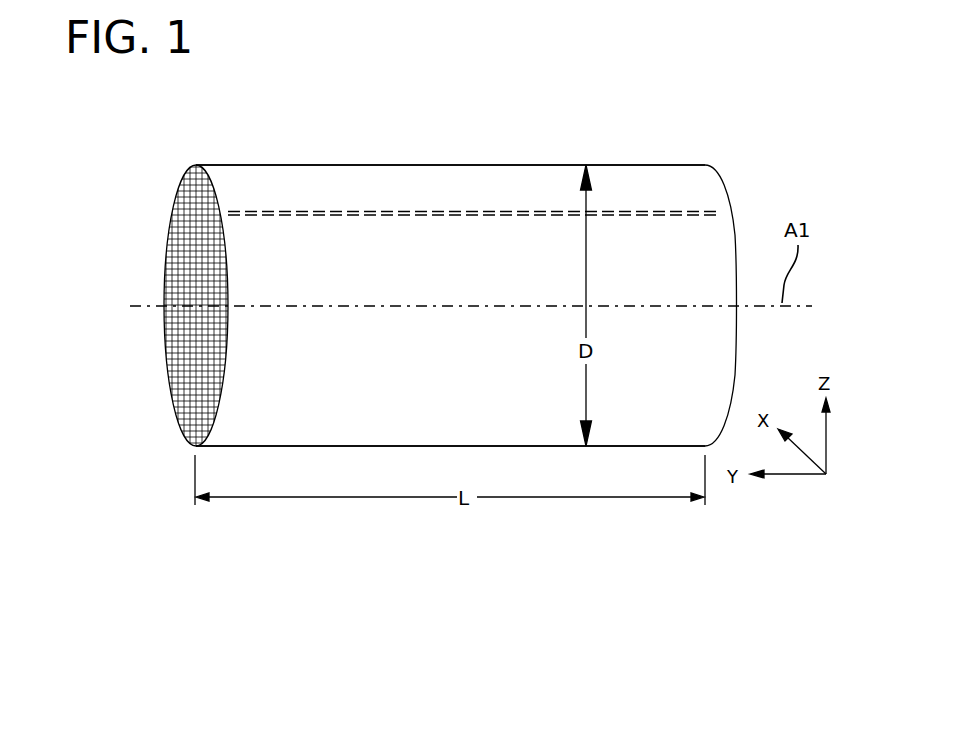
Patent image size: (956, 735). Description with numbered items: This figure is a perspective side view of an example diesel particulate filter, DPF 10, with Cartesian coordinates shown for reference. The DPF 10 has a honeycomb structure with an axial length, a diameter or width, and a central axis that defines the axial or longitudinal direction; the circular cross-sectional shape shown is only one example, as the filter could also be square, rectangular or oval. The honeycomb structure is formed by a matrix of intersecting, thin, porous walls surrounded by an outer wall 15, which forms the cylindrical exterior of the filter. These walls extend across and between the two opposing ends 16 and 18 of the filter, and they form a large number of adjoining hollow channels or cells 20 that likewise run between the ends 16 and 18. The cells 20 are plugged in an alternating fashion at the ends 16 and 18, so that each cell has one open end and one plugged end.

The DPF 10 is at (748, 101).
The outer wall 15 is at (337, 424).
The end 16 is at (190, 370).
The end 18 is at (736, 350).
The cells 20 is at (478, 210).